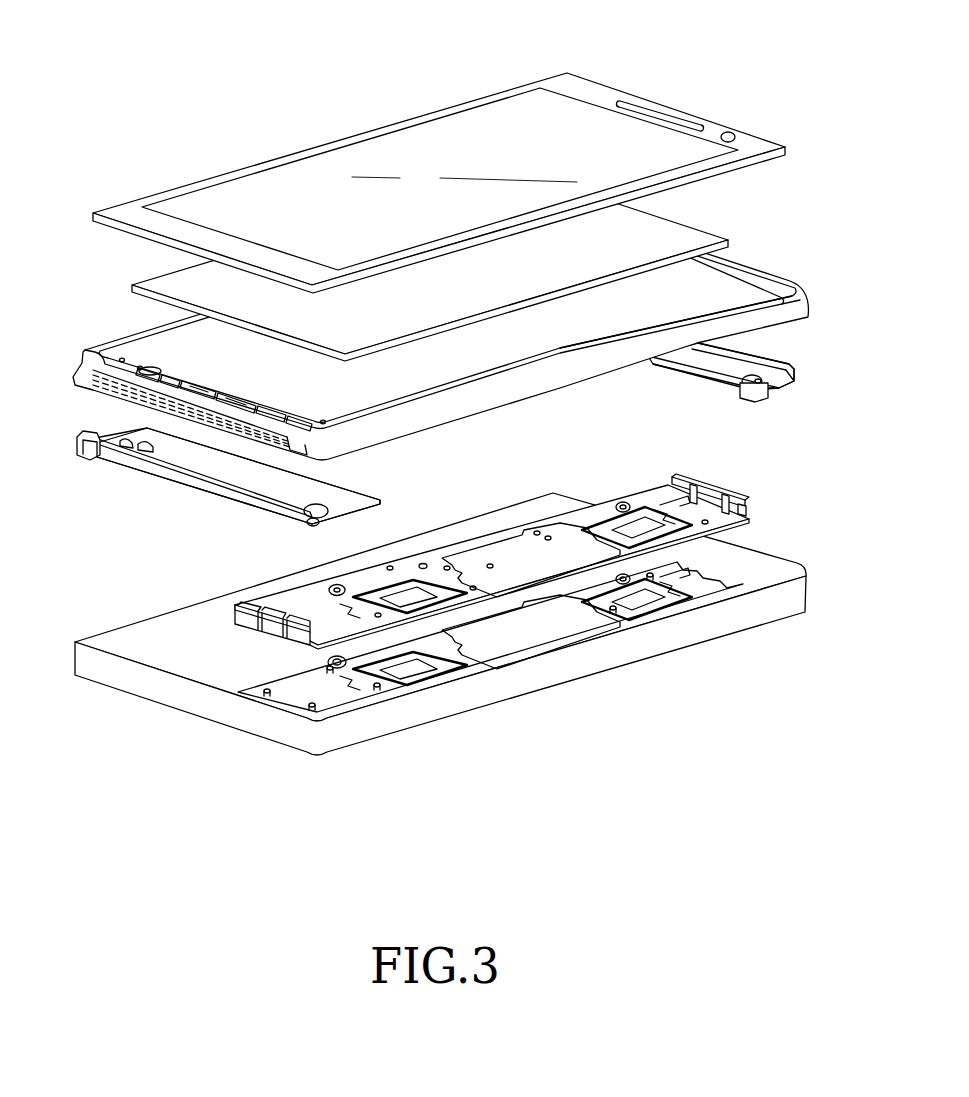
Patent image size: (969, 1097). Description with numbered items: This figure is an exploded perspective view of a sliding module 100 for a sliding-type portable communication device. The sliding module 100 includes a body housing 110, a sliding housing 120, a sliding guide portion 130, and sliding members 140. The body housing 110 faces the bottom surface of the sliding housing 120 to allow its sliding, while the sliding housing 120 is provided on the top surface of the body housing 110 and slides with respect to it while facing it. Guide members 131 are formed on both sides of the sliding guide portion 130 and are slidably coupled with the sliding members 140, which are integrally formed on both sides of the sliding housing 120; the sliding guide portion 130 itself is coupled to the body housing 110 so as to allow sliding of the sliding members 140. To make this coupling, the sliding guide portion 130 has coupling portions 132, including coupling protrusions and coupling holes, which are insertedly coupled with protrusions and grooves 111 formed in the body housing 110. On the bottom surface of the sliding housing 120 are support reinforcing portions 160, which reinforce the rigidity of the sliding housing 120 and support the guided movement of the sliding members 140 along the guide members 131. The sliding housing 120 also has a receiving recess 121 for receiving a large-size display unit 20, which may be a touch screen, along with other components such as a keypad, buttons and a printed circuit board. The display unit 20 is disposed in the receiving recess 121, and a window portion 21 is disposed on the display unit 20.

The sliding module 100 is at (152, 75).
The display unit 20 is at (660, 227).
The window portion 21 is at (343, 140).
The body housing 110 is at (142, 688).
The protrusions and grooves 111 is at (613, 612).
The sliding housing 120 is at (777, 272).
The receiving recess 121 is at (553, 338).
The sliding guide portion 130 is at (737, 525).
The guide members 131 is at (240, 605).
The coupling portions 132 is at (583, 533).
The sliding members 140 is at (92, 380).
The support reinforcing portions 160 is at (143, 467).